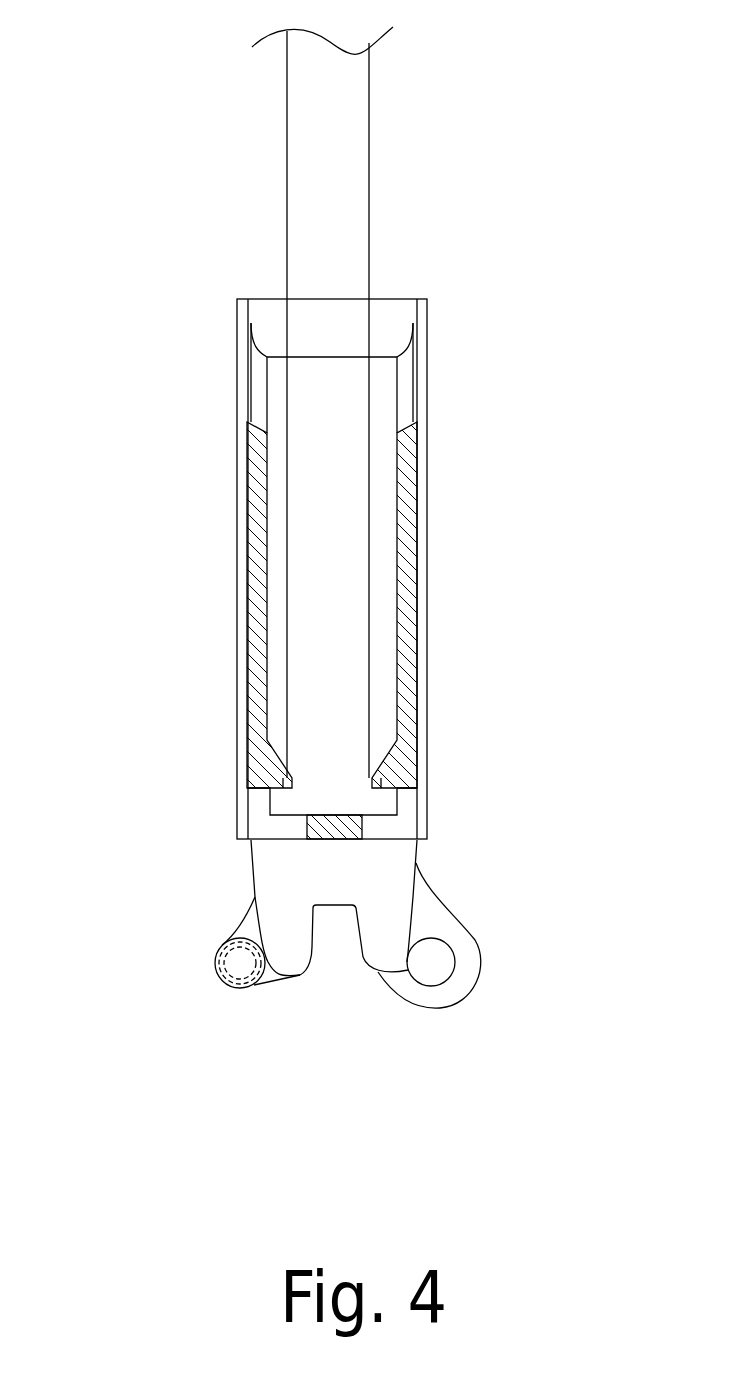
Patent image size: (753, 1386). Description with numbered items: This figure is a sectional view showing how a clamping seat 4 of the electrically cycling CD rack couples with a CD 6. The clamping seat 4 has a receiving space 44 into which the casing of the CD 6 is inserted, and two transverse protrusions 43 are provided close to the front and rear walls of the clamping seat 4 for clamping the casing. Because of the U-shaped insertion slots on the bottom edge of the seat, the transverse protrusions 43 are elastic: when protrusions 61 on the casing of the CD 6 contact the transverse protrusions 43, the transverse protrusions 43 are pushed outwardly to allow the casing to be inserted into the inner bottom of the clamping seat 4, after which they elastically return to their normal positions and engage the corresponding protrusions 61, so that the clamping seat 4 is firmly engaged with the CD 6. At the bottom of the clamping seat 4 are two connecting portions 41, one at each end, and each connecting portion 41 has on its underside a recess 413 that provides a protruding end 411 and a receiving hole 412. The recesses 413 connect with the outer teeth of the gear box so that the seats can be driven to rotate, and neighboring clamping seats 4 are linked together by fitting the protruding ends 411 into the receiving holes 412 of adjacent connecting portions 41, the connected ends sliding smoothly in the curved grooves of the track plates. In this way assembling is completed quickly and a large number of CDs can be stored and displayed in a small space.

The clamping seat 4 is at (470, 238).
The CD 6 is at (310, 136).
The connecting portion 41 is at (283, 872).
The transverse protrusion 43 is at (283, 768).
The receiving space 44 is at (330, 445).
The protrusion 61 is at (373, 782).
The protruding end 411 is at (235, 965).
The receiving hole 412 is at (433, 963).
The recess 413 is at (335, 920).